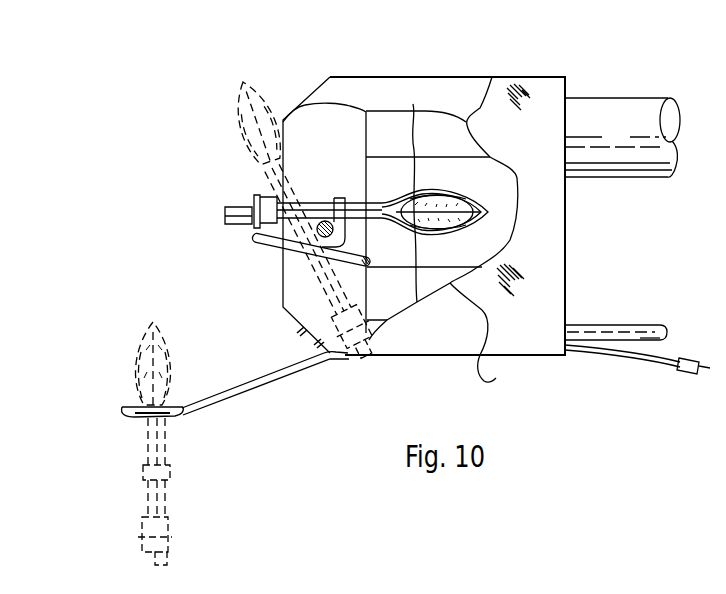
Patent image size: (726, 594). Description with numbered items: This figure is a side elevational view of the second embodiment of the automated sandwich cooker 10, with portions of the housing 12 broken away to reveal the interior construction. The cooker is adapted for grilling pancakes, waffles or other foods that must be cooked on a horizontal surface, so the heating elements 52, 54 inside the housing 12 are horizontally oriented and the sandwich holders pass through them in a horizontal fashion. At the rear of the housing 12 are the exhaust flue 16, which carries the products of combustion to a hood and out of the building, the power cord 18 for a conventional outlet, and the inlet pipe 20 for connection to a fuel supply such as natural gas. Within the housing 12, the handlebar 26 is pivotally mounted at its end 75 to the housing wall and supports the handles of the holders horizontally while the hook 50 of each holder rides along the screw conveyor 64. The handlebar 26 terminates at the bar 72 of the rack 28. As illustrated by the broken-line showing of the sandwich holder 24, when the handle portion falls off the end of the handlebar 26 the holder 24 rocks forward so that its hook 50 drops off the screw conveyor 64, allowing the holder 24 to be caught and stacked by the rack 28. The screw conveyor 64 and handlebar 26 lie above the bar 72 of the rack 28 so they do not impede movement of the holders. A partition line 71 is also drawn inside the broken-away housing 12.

The automated sandwich cooker 10 is at (398, 72).
The housing 12 is at (318, 92).
The exhaust flue 16 is at (590, 106).
The power cord 18 is at (654, 363).
The inlet pipe 20 is at (591, 325).
The sandwich holder 24 is at (289, 158).
The handlebar 26 is at (266, 245).
The rack 28 is at (123, 407).
The hook 50 is at (304, 205).
The heating element 52 is at (489, 326).
The heating element 54 is at (492, 77).
The screw conveyor 64 is at (314, 273).
The partition wall 71 is at (413, 146).
The bar of rack 72 is at (221, 403).
The end of handlebar 75 is at (136, 417).